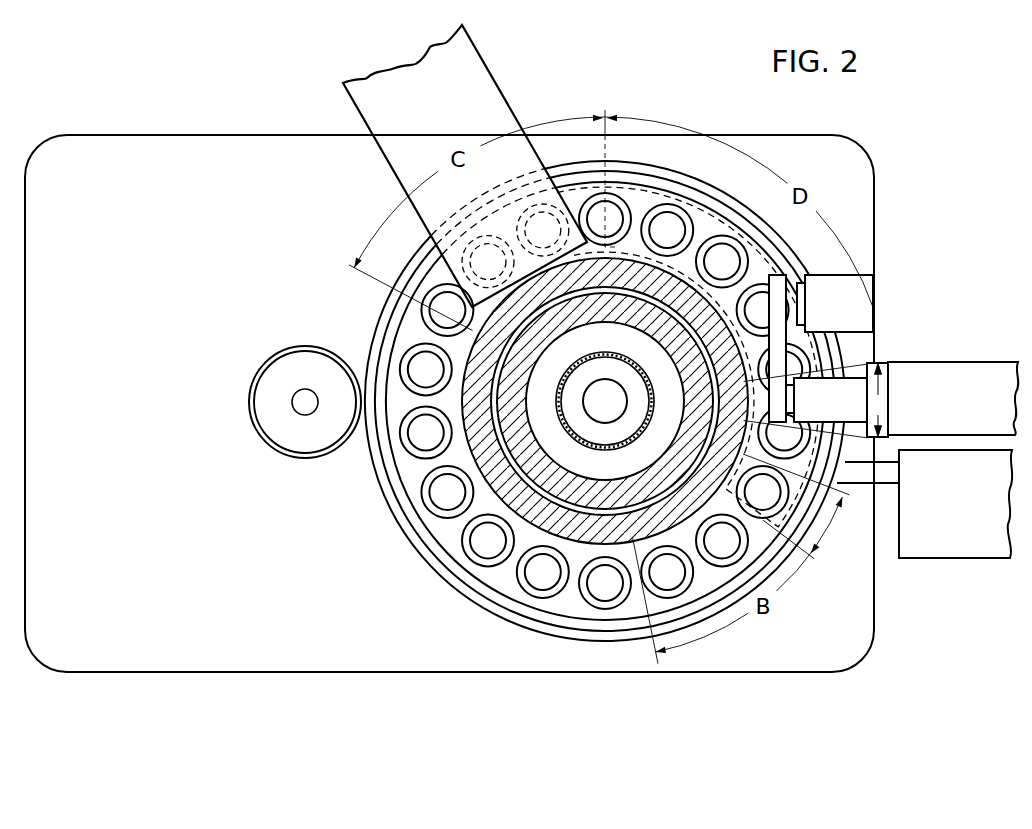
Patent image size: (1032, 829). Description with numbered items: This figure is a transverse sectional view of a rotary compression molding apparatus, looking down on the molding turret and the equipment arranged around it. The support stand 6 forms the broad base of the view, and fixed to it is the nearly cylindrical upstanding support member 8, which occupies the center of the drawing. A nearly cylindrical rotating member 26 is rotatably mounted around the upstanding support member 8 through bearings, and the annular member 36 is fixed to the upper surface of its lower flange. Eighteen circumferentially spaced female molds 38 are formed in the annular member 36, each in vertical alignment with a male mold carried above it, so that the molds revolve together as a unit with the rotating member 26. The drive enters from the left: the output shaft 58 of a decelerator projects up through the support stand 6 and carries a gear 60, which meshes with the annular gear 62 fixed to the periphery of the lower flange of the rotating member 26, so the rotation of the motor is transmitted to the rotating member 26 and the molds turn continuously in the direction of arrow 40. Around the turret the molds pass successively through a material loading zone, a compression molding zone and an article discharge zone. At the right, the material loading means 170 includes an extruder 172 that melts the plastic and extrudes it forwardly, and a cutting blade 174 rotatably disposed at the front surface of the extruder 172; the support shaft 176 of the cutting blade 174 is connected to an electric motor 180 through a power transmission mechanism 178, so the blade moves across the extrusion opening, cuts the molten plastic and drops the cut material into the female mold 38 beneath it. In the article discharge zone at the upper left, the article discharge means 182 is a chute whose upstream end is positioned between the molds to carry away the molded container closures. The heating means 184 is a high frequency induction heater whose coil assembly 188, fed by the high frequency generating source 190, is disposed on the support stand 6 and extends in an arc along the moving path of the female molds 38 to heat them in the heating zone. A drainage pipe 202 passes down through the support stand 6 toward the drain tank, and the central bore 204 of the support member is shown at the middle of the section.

The support stand 6 is at (333, 658).
The upstanding support member 8 is at (563, 465).
The rotating member 26 is at (585, 543).
The annular member 36 is at (512, 598).
The female molds 38 is at (486, 567).
The arrow 40 is at (586, 433).
The output shaft 58 is at (306, 414).
The gear 60 is at (258, 429).
The annular gear 62 is at (378, 484).
The material loading means 170 is at (852, 368).
The extruder 172 is at (998, 360).
The cutting blade 174 is at (795, 418).
The support shaft 176 is at (792, 401).
The power transmission mechanism 178 is at (778, 307).
The electric motor 180 is at (875, 273).
The article discharge means 182 is at (390, 168).
The heating means 184 is at (912, 564).
The coil assembly 188 is at (700, 207).
The high frequency generating source 190 is at (986, 551).
The drainage pipe 202 is at (640, 432).
The center bore 204 is at (602, 378).